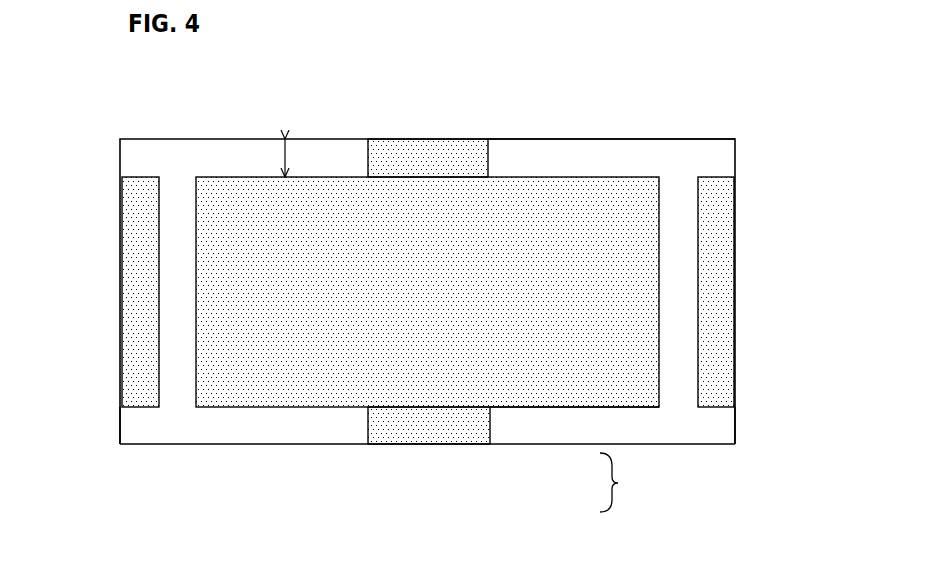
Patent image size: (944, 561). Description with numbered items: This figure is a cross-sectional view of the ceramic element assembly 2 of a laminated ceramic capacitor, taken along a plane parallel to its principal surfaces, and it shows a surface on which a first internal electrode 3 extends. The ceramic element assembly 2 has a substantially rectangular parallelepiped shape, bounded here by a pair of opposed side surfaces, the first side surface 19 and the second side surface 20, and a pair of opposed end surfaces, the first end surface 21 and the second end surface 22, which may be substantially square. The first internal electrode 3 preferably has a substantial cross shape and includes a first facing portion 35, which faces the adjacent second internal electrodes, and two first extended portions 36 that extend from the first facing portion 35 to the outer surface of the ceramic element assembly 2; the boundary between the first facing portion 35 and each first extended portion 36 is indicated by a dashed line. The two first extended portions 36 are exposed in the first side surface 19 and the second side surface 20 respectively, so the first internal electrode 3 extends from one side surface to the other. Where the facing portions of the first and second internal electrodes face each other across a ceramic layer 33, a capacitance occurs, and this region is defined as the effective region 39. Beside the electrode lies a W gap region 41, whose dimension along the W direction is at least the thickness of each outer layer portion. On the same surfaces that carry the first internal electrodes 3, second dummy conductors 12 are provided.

The ceramic element assembly 2 is at (162, 80).
The first internal electrode 3 is at (619, 482).
The second dummy conductor 12 is at (122, 230).
The first side surface 19 is at (522, 139).
The second side surface 20 is at (310, 445).
The first end surface 21 is at (120, 420).
The second end surface 22 is at (735, 422).
The ceramic layer 33 is at (605, 152).
The first facing portion 35 is at (550, 395).
The first extended portion 36 is at (488, 428).
The effective region 39 is at (246, 409).
The W gap region 41 is at (283, 159).